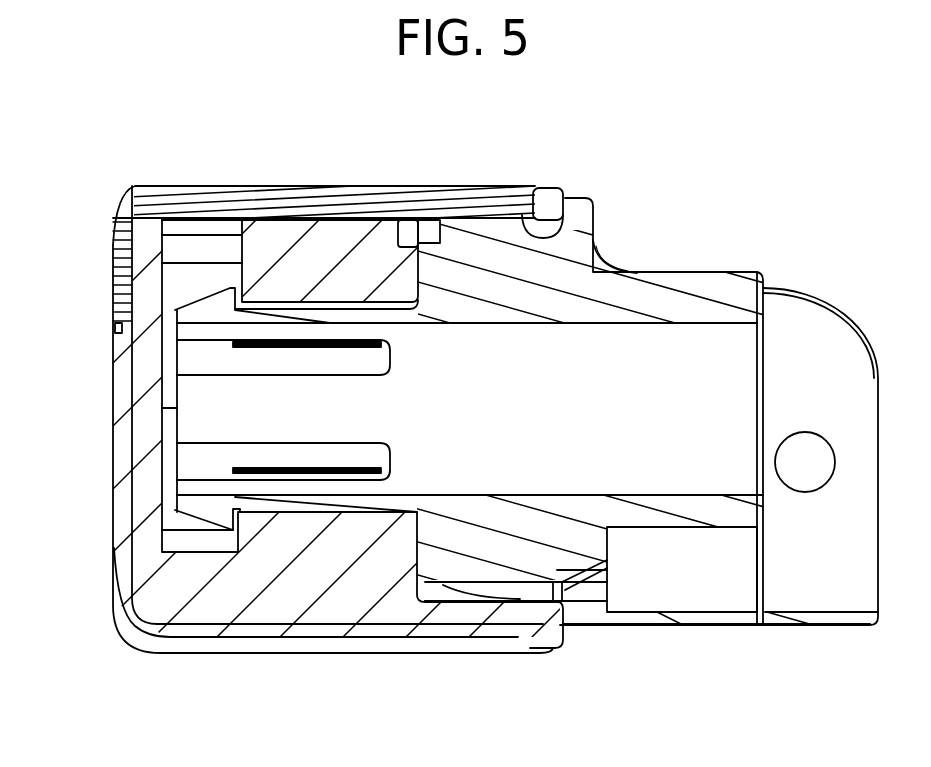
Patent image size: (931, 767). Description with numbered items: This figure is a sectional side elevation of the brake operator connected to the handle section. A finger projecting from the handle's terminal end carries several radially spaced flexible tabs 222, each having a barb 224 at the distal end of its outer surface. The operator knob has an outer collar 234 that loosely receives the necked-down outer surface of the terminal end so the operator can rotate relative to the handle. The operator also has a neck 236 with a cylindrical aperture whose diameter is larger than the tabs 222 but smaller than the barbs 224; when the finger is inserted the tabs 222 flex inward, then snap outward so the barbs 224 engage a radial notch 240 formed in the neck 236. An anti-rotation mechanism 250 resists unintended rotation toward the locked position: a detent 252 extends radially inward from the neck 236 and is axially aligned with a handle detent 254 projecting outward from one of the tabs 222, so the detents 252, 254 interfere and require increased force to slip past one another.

The flexible tabs 222 is at (587, 313).
The barb 224 is at (200, 300).
The outer collar 234 is at (563, 222).
The neck 236 is at (397, 313).
The radial notch 240 is at (257, 248).
The anti-rotation mechanism 250 is at (357, 527).
The detent 252 is at (333, 590).
The handle detent 254 is at (253, 602).